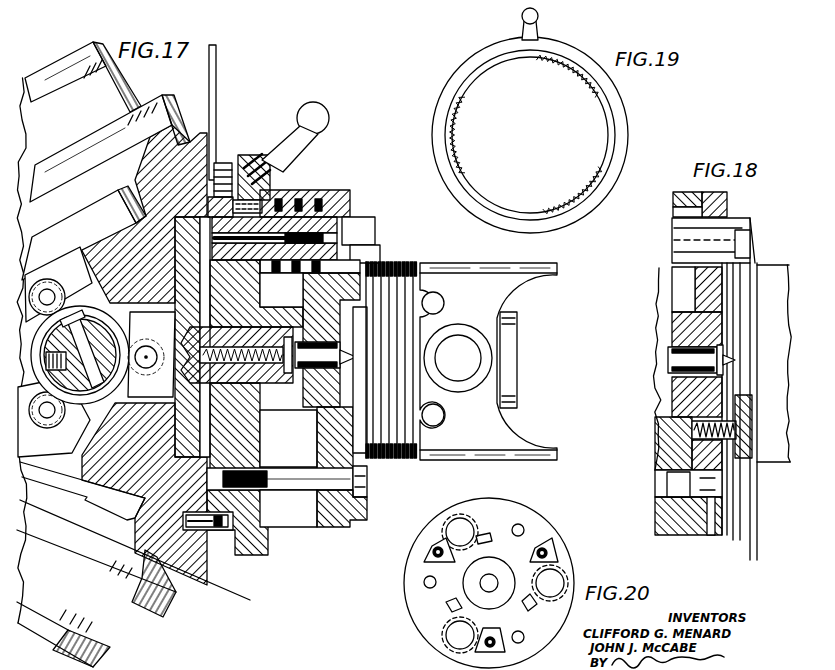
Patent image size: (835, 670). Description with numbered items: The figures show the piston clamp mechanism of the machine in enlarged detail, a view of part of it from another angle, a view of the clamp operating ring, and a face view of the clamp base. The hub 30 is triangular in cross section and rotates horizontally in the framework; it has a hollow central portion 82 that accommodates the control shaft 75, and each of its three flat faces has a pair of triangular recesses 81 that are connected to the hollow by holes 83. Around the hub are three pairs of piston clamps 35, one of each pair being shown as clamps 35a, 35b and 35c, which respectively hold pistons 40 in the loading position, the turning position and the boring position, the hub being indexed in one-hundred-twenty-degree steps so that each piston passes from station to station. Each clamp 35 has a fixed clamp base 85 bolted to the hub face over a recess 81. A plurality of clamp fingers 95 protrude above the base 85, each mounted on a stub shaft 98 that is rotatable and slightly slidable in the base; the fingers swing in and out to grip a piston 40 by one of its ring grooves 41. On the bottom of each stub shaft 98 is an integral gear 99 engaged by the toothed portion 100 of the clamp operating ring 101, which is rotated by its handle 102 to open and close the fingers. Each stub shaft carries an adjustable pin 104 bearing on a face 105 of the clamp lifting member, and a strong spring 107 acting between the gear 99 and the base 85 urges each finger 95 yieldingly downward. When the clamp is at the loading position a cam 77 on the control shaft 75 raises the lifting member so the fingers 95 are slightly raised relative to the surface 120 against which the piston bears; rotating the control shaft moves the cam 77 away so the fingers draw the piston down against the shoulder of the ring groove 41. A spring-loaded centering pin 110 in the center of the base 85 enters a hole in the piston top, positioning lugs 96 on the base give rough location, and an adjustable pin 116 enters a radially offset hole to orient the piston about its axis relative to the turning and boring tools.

In FIG. 17, the hub 30 is at (193, 132).
In FIG. 17, the piston clamp 35 is at (338, 193).
In FIG. 17, the piston clamp in loading position 35a is at (148, 100).
In FIG. 17, the piston clamp in turning position 35b is at (298, 190).
In FIG. 17, the piston clamp in boring position 35c is at (176, 607).
In FIG. 17, the piston 40 is at (517, 258).
In FIG. 17, the ring groove 41 is at (378, 458).
In FIG. 17, the control shaft 75 is at (137, 337).
In FIG. 17, the cam 77 is at (80, 346).
In FIG. 17, the recess 81 is at (133, 507).
In FIG. 17, the hollow central portion 82 is at (151, 355).
In FIG. 17, the hole 83 is at (58, 284).
In FIG. 17, the clamp base 85 is at (352, 518).
In FIG. 18, the clamp base 85 is at (700, 538).
In FIG. 20, the clamp base 85 is at (535, 530).
In FIG. 17, the clamp finger 95 is at (378, 262).
In FIG. 18, the clamp finger 95 is at (755, 267).
In FIG. 20, the positioning lug 96 is at (430, 563).
In FIG. 17, the stub shaft 98 is at (352, 213).
In FIG. 18, the stub shaft 98 is at (727, 223).
In FIG. 17, the gear 99 is at (281, 290).
In FIG. 19, the serrations 100 is at (545, 62).
In FIG. 17, the clamp operating ring 101 is at (246, 155).
In FIG. 19, the clamp operating ring 101 is at (622, 124).
In FIG. 17, the handle 102 is at (329, 119).
In FIG. 19, the handle 102 is at (539, 18).
In FIG. 17, the pin 104 is at (128, 217).
In FIG. 17, the face 105 is at (167, 224).
In FIG. 17, the spring 107 is at (283, 273).
In FIG. 17, the centering pin 110 is at (356, 368).
In FIG. 18, the centering pin 110 is at (725, 354).
In FIG. 18, the adjustable pin 116 is at (737, 431).
In FIG. 17, the surface 120 is at (408, 281).